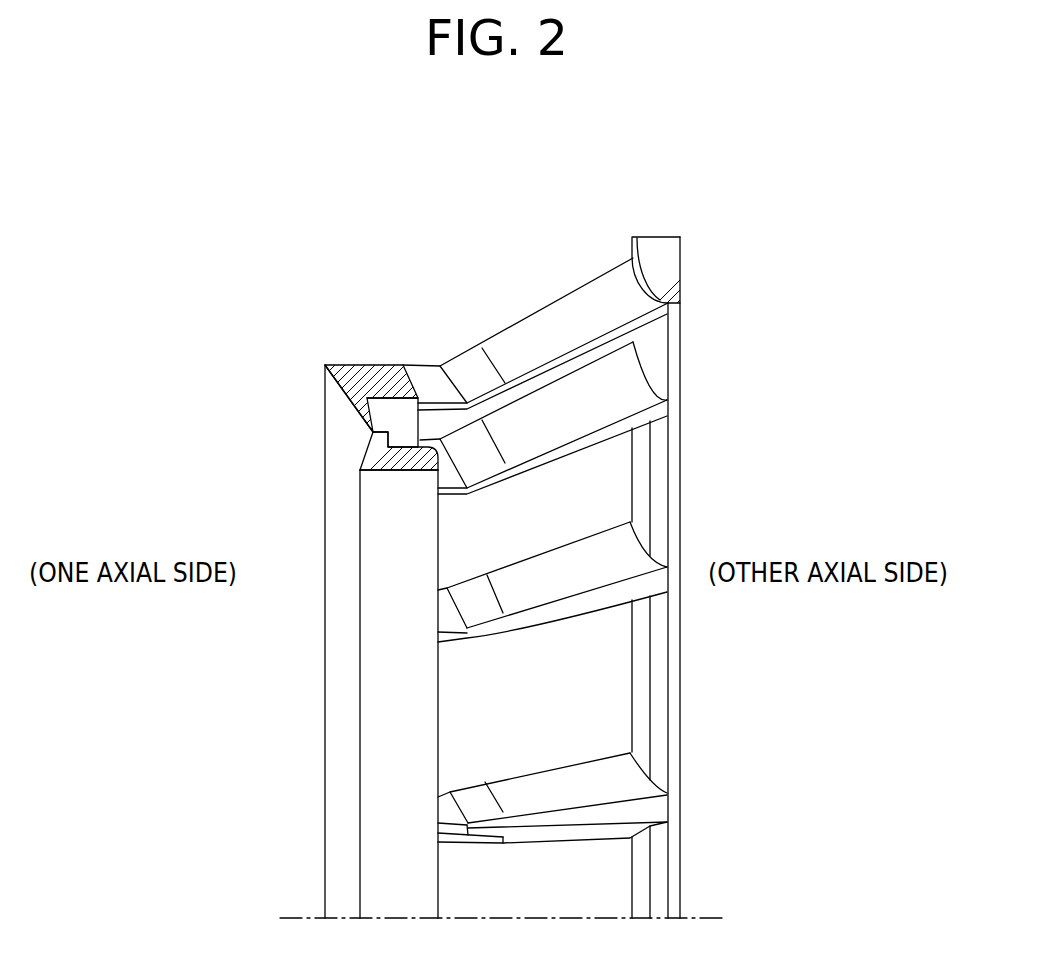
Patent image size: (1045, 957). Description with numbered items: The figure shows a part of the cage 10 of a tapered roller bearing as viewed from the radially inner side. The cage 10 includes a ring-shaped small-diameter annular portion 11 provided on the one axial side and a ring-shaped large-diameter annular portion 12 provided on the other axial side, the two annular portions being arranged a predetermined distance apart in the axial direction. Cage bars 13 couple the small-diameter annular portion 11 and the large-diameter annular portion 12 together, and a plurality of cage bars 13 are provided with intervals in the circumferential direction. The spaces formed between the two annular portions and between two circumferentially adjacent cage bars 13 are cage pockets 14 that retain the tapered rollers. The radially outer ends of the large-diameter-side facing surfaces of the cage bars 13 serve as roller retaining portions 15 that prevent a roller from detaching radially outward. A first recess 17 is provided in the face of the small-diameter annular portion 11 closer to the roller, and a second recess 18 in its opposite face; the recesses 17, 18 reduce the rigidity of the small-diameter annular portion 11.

The cage 10 is at (325, 707).
The small-diameter annular portion 11 is at (385, 857).
The large-diameter annular portion 12 is at (675, 687).
The cage bar 13 is at (552, 409).
The cage pocket 14 is at (478, 532).
The roller retaining portion 15 is at (560, 543).
The first recess 17 is at (388, 431).
The second recess 18 is at (343, 452).